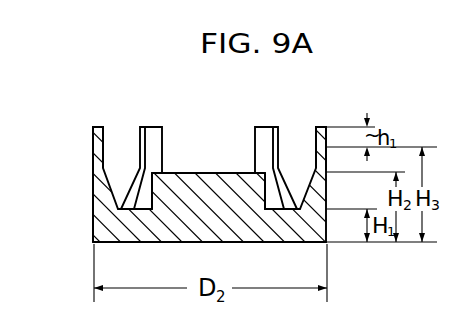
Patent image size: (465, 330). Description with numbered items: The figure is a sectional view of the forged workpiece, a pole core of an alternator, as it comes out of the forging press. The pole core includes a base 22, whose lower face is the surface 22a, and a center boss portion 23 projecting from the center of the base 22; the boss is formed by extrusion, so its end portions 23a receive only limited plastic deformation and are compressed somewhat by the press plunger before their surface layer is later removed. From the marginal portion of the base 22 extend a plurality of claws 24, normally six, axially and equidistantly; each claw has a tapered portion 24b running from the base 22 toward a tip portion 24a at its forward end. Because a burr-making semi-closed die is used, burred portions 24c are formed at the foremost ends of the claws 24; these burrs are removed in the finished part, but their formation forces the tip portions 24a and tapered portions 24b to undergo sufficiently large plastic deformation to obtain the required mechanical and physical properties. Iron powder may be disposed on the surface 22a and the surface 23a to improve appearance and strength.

The base 22 is at (137, 243).
The surface of the base 22a is at (228, 249).
The center boss portion 23 is at (193, 173).
The end portions of the boss portion 23a is at (223, 166).
The claws 24 is at (155, 117).
The tip portions 24a is at (93, 156).
The tapered portions 24b is at (93, 217).
The burred portions 24c is at (320, 127).